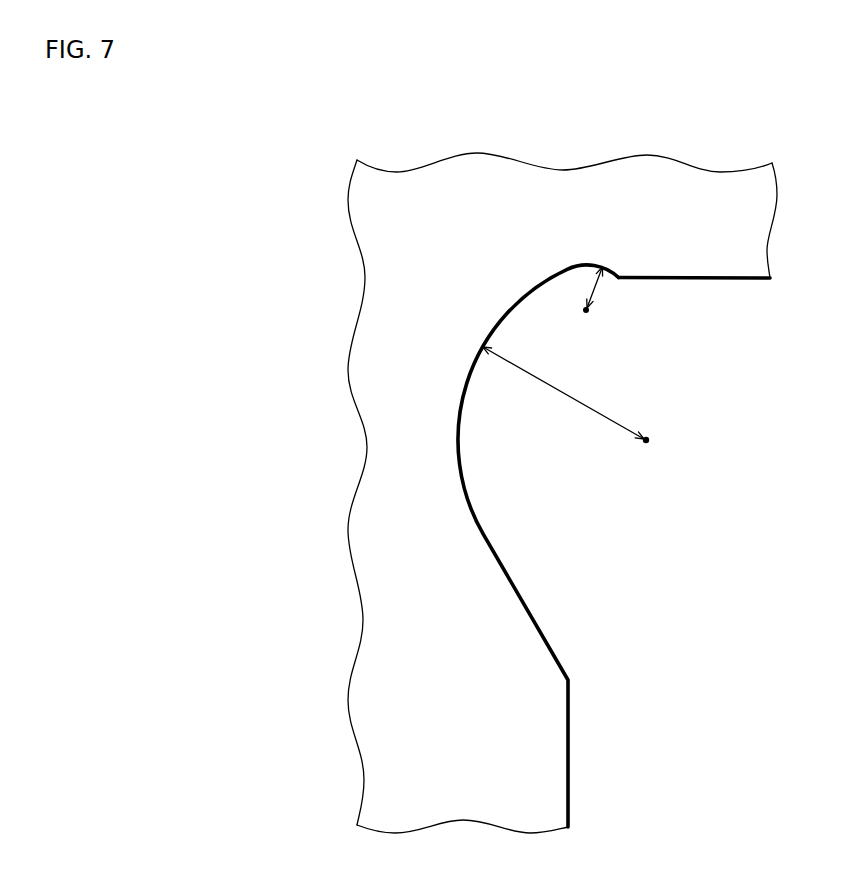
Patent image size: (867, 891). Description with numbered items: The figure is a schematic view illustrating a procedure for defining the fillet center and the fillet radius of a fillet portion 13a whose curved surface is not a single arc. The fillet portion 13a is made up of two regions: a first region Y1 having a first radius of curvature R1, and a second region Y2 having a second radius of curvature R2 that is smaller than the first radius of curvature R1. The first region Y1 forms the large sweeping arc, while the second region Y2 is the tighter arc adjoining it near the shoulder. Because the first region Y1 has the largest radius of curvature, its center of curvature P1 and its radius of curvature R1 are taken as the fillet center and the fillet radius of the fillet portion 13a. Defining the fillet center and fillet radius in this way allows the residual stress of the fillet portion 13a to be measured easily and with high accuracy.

The first region Y1 is at (477, 357).
The second region Y2 is at (595, 265).
The fillet portion 13a is at (470, 382).
The first radius of curvature R1 is at (563, 393).
The second radius of curvature R2 is at (607, 293).
The center of curvature P1 is at (648, 439).